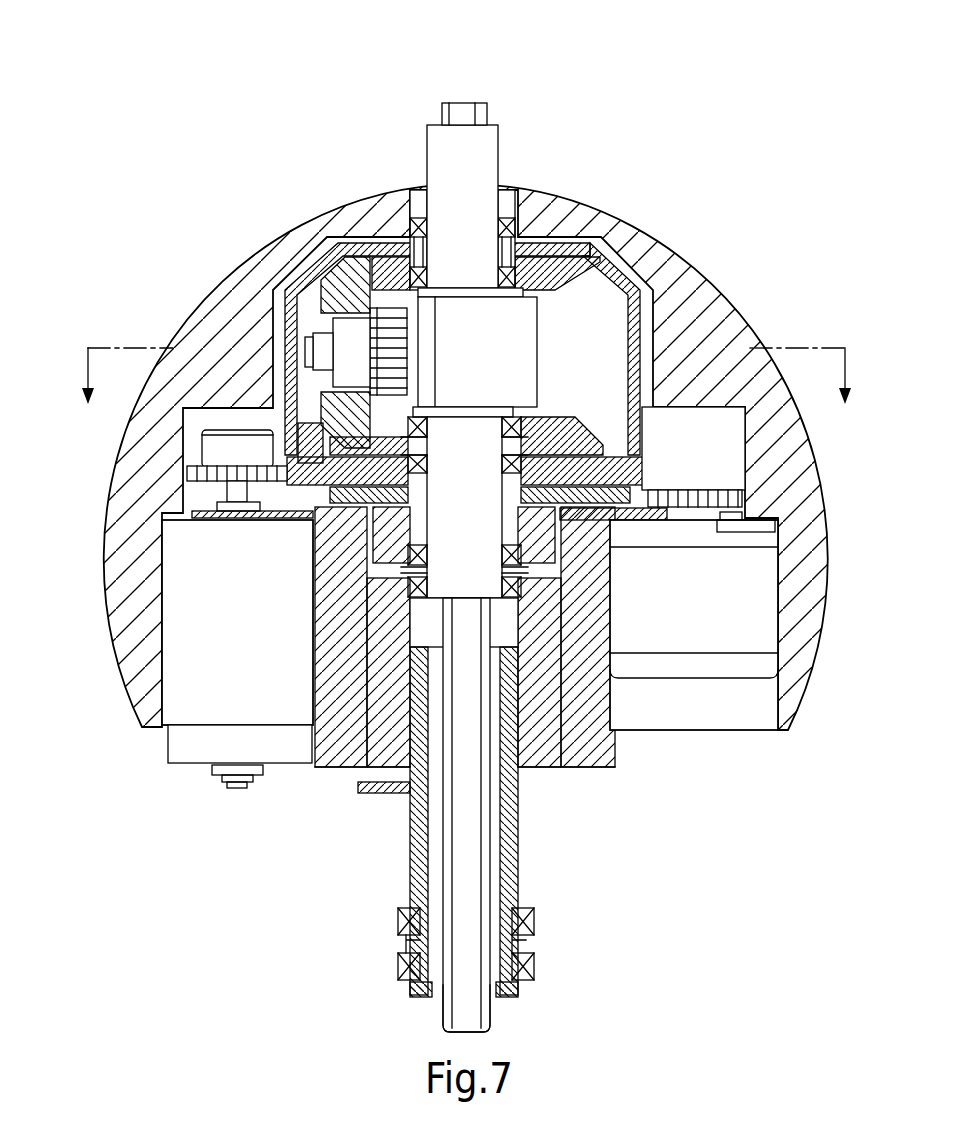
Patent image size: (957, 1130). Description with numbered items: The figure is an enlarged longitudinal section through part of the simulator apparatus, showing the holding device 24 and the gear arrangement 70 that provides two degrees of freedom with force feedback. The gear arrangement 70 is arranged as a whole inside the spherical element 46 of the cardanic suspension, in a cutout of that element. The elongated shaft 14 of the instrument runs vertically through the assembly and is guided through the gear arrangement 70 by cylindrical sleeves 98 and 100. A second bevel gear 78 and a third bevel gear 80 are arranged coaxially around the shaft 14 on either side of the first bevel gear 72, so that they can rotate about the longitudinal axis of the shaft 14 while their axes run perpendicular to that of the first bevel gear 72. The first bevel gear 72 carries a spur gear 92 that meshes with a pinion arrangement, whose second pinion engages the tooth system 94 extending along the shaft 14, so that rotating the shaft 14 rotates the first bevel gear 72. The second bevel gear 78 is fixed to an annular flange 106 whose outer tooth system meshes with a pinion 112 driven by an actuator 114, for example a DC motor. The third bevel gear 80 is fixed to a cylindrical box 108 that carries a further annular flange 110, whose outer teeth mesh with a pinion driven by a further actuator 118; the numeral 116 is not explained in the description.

The shaft 14 is at (450, 1007).
The holding device 24 is at (692, 218).
The spherical element 46 is at (240, 318).
The gear arrangement 70 is at (343, 190).
The first bevel gear 72 is at (350, 412).
The second bevel gear 78 is at (566, 414).
The third bevel gear 80 is at (563, 250).
The spur gear 92 is at (388, 355).
The tooth system 94 is at (463, 878).
The cylindrical sleeve 98 is at (468, 172).
The cylindrical sleeve 100 is at (458, 563).
The annular flange 106 is at (620, 525).
The box 108 is at (630, 313).
The annular flange 110 is at (305, 548).
The pinion 112 is at (698, 500).
The actuator 114 is at (700, 620).
The toothed coupling plate 116 is at (190, 483).
The actuator 118 is at (220, 690).